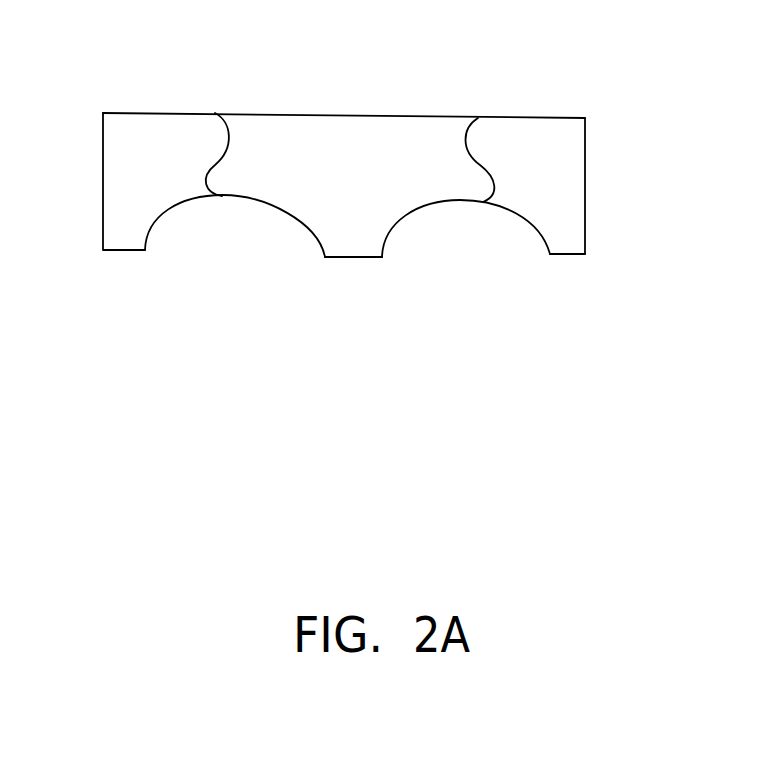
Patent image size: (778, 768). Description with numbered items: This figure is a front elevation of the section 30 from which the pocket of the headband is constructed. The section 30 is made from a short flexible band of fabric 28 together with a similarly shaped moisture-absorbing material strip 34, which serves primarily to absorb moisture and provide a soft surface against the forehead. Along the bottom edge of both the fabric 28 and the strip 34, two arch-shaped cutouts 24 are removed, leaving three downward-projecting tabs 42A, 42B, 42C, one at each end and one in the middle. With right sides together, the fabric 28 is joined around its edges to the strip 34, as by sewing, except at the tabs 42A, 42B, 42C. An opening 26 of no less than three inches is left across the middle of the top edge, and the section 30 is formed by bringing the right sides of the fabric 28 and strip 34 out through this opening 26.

The cutouts 24 is at (255, 198).
The opening 26 is at (382, 115).
The fabric 28 is at (545, 190).
The section 30 is at (140, 112).
The moisture-absorbing material strip 34 is at (307, 225).
The tab 42A is at (113, 250).
The tab 42B is at (348, 260).
The tab 42C is at (573, 255).